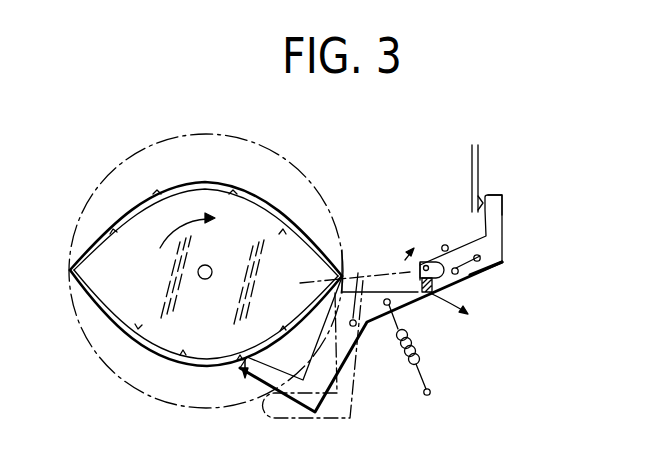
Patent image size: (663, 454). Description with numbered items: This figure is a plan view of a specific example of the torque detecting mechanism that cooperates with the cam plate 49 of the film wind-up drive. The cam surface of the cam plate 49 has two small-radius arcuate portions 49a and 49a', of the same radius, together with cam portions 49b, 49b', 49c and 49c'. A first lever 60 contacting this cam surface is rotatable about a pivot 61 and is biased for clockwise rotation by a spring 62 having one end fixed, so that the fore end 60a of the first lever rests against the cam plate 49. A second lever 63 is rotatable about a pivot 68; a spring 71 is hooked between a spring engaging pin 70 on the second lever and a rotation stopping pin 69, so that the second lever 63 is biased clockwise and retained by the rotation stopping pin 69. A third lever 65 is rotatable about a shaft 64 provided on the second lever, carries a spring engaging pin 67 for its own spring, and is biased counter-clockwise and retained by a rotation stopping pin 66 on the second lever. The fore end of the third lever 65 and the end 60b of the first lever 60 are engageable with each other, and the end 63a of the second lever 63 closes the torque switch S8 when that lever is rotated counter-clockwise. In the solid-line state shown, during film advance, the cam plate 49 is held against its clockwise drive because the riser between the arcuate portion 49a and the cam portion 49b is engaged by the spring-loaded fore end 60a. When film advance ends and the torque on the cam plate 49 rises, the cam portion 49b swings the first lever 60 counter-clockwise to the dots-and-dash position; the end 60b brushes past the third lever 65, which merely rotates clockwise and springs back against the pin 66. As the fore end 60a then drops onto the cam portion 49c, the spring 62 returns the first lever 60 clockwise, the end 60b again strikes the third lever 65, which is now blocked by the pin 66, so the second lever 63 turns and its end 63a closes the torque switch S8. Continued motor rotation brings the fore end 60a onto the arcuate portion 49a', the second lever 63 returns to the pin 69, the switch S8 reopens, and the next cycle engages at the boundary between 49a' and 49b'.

The cam plate 49 is at (209, 193).
The arcuate portion 49a is at (188, 337).
The arcuate portion 49a' is at (245, 211).
The cam portion 49b is at (274, 313).
The cam portion 49b' is at (124, 234).
The cam portion 49c is at (295, 273).
The cam portion 49c' is at (123, 280).
The first lever 60 is at (348, 355).
The fore end of the first lever 60a is at (240, 372).
The end of the first lever 60b is at (411, 335).
The pivot 61 is at (357, 287).
The spring 62 is at (422, 360).
The second lever 63 is at (498, 245).
The end of the second lever 63a is at (490, 196).
The shaft 64 is at (406, 252).
The third lever 65 is at (421, 264).
The rotation stopping pin 66 is at (461, 303).
The spring engaging pin 67 is at (425, 292).
The pivot 68 is at (498, 263).
The rotation stopping pin 69 is at (444, 246).
The spring engaging pin 70 is at (455, 268).
The spring 71 is at (476, 203).
The torque switch S8 is at (478, 157).